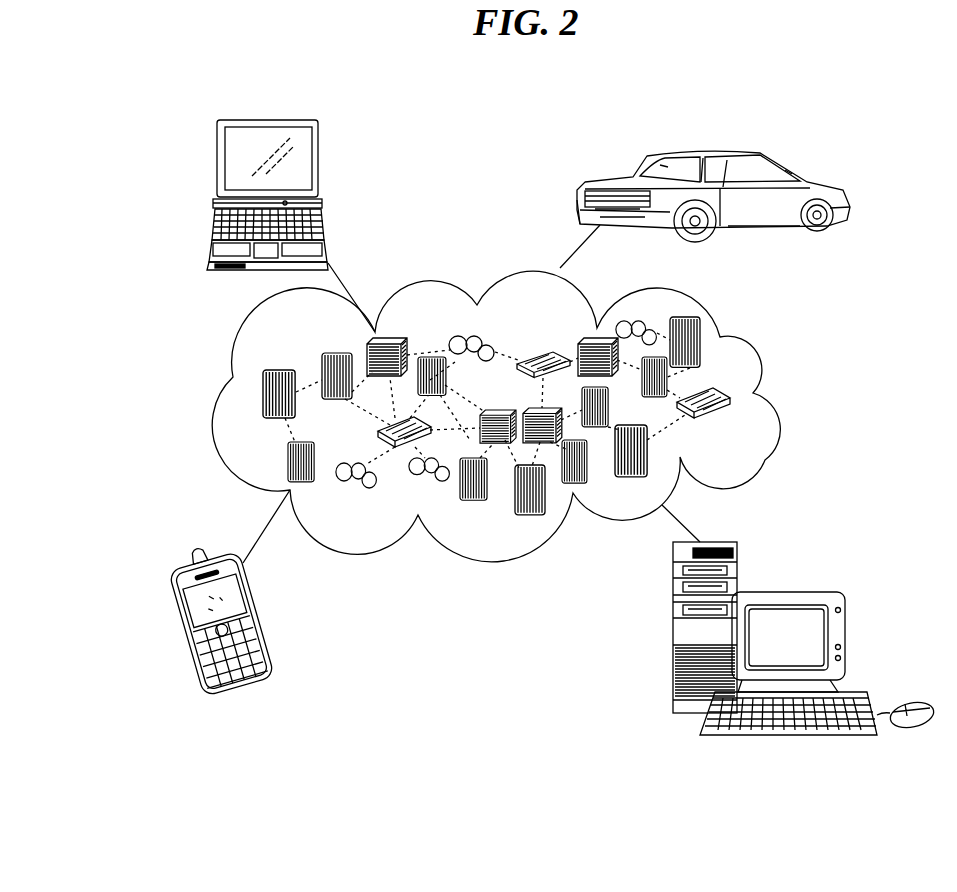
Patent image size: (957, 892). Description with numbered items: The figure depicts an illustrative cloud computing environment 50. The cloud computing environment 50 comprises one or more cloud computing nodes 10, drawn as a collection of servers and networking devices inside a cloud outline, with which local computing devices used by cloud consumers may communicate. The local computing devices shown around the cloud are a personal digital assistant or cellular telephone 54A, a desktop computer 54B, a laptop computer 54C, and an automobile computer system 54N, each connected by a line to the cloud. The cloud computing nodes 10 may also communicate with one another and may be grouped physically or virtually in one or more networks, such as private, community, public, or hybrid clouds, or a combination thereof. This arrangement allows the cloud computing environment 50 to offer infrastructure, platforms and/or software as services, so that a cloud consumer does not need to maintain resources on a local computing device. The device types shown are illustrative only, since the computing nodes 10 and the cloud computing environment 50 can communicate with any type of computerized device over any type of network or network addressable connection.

The cloud computing environment 50 is at (757, 347).
The cloud computing nodes 10 is at (747, 440).
The personal digital assistant (PDA) or cellular telephone 54A is at (182, 628).
The desktop computer 54B is at (800, 592).
The laptop computer 54C is at (236, 120).
The automobile computer system 54N is at (765, 172).